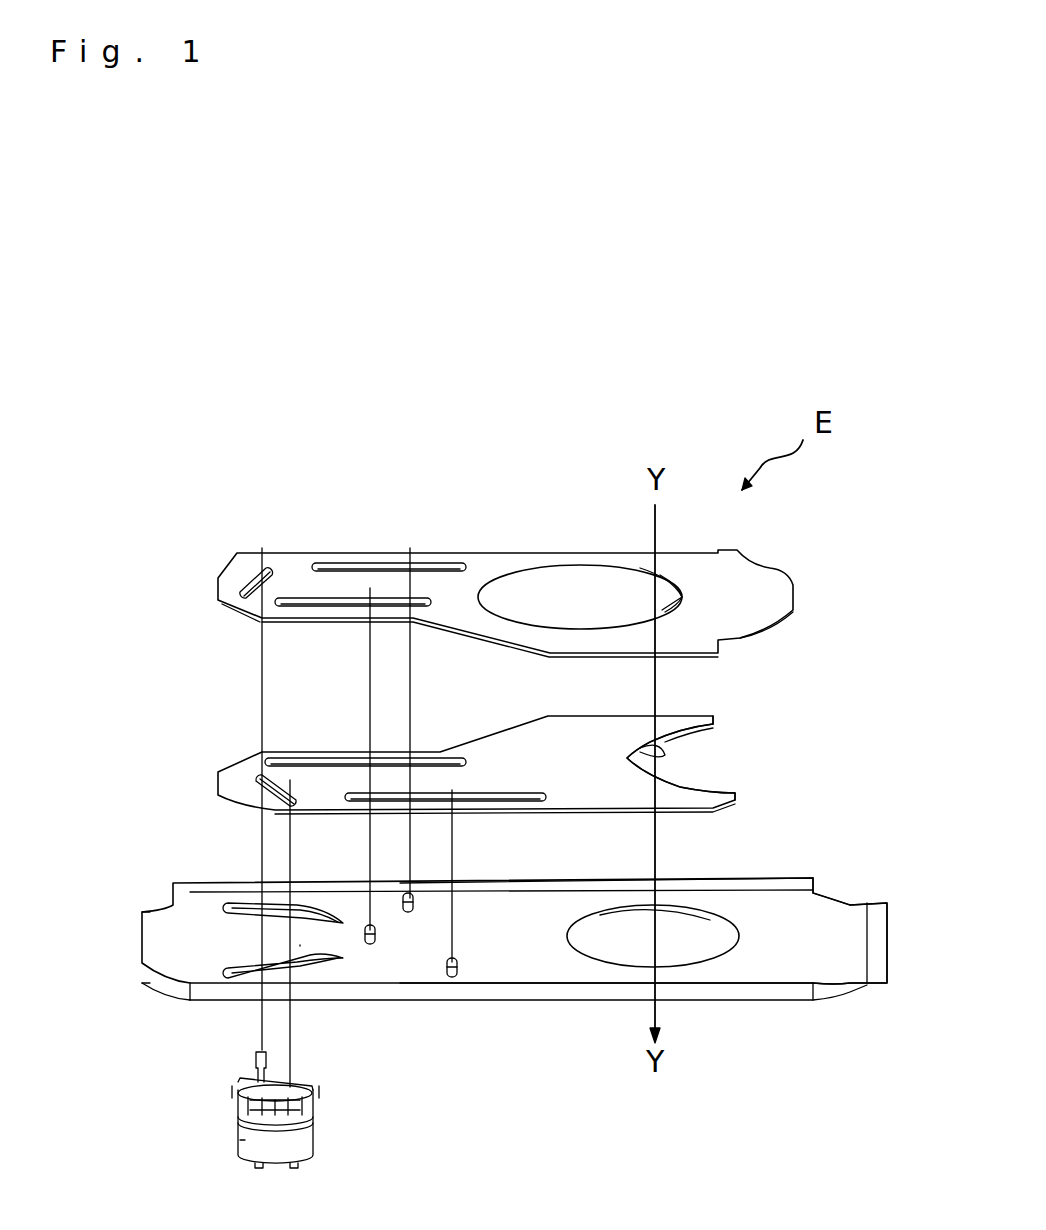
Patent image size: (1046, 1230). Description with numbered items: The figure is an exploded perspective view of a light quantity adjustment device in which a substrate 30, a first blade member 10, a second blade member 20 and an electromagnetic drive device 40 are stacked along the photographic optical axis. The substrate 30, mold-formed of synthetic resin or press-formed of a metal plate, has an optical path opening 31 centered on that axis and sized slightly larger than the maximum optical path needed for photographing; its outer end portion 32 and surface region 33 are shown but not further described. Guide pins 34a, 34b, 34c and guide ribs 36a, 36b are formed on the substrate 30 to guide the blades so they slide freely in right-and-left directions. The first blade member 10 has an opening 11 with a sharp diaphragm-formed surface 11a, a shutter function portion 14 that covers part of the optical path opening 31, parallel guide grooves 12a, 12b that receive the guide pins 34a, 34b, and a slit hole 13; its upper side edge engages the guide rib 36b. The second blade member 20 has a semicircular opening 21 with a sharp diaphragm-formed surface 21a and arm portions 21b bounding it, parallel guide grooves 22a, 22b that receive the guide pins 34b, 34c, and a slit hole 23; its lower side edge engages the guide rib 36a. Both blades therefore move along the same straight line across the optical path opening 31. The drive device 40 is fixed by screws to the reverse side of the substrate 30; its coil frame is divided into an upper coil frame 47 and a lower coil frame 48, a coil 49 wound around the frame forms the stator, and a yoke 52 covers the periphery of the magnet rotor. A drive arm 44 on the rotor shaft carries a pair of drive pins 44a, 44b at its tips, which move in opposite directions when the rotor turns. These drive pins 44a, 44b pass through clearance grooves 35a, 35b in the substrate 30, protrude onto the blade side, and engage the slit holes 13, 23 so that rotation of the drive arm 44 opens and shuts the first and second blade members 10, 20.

The first blade member 10 is at (206, 586).
The opening 11 is at (530, 585).
The diaphragm-formed surface 11a is at (640, 595).
The guide groove 12a is at (372, 575).
The guide groove 12b is at (300, 602).
The slit hole 13 is at (250, 580).
The shutter function portion 14 is at (750, 598).
The second blade member 20 is at (206, 759).
The semicircular opening 21 is at (690, 732).
The diaphragm-formed surface 21a is at (660, 745).
The arm portion 21b is at (712, 720).
The guide groove 22a is at (330, 760).
The guide groove 22b is at (515, 800).
The slit hole 23 is at (265, 783).
The substrate 30 is at (171, 902).
The optical path opening 31 is at (690, 932).
The base plate end portion 32 is at (800, 915).
The base plate surface 33 is at (425, 925).
The guide pin 34a is at (415, 905).
The guide pin 34b is at (365, 922).
The guide pin 34c is at (465, 975).
The clearance groove 35a is at (260, 905).
The clearance groove 35b is at (315, 970).
The guide rib 36a is at (560, 965).
The guide rib 36b is at (585, 898).
The electromagnetic drive device 40 is at (216, 1132).
The drive arm 44 is at (265, 1120).
The drive pin 44a is at (255, 1062).
The drive pin 44b is at (310, 1130).
The upper coil frame 47 is at (300, 1083).
The lower coil frame 48 is at (305, 1108).
The coil 49 is at (245, 1085).
The yoke 52 is at (245, 1140).